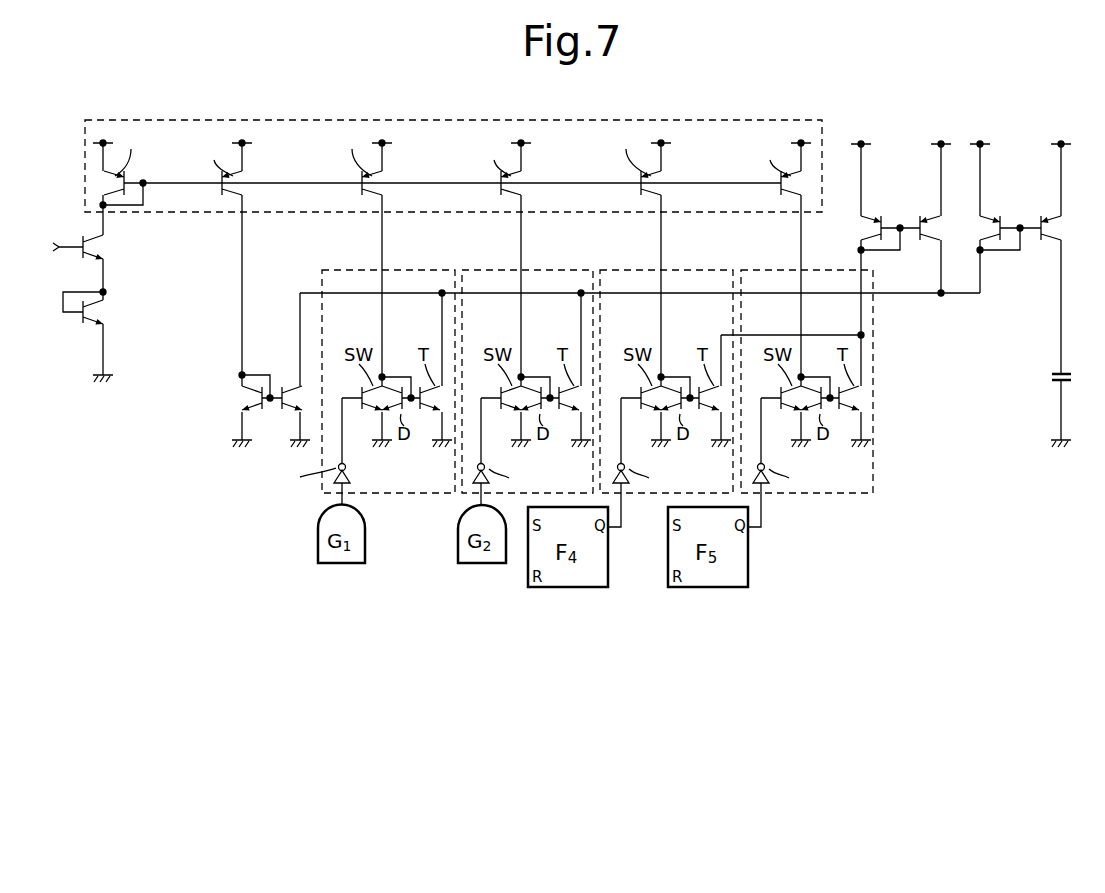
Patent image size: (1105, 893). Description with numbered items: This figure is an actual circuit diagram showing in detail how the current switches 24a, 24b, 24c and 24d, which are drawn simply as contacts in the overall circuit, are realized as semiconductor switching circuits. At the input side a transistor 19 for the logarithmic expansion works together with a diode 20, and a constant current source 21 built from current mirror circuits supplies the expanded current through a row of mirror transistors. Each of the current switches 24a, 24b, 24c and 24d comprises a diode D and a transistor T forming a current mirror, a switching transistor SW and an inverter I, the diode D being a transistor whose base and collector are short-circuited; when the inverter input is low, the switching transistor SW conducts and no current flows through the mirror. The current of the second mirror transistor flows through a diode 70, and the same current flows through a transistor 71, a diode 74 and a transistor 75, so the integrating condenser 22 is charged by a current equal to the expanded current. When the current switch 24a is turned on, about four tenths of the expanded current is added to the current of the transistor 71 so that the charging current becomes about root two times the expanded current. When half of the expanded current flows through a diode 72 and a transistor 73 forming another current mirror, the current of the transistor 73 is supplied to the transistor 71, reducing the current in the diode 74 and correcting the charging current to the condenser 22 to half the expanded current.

The transistor for the logarithmic expansion 19 is at (98, 243).
The diode 20 is at (103, 304).
The constant current source 21 is at (175, 213).
The integrating condenser 22 is at (1052, 375).
The current switch 24a is at (342, 268).
The current switch 24b is at (482, 268).
The current switch 24c is at (622, 268).
The current switch 24d is at (762, 268).
The diode 70 is at (246, 393).
The transistor 71 is at (298, 386).
The diode 72 is at (873, 222).
The transistor 73 is at (930, 221).
The diode 74 is at (991, 222).
The transistor 75 is at (1050, 222).